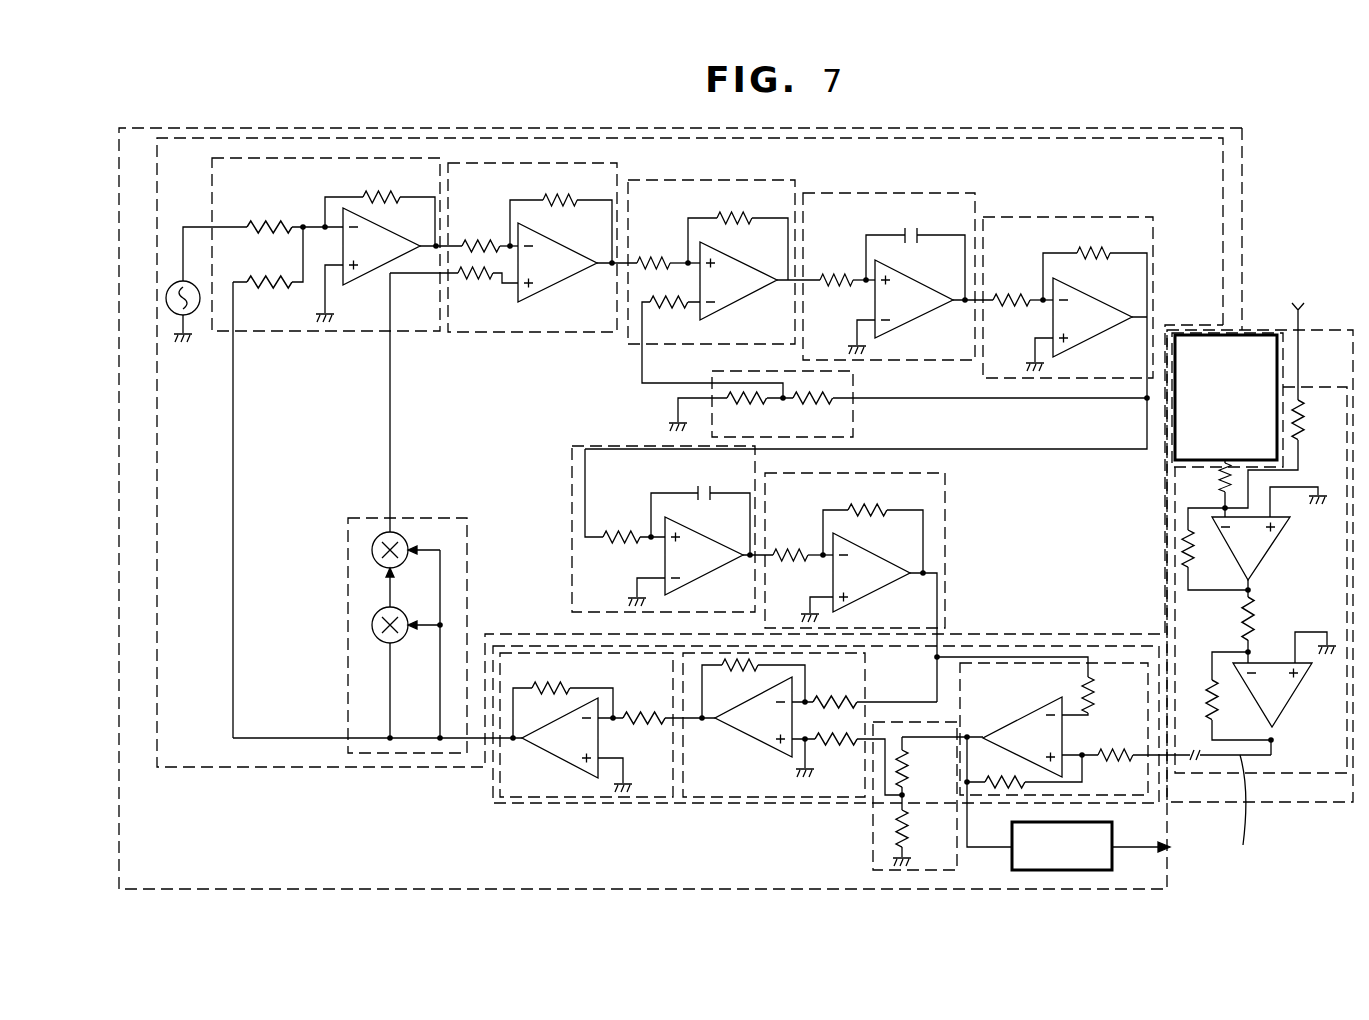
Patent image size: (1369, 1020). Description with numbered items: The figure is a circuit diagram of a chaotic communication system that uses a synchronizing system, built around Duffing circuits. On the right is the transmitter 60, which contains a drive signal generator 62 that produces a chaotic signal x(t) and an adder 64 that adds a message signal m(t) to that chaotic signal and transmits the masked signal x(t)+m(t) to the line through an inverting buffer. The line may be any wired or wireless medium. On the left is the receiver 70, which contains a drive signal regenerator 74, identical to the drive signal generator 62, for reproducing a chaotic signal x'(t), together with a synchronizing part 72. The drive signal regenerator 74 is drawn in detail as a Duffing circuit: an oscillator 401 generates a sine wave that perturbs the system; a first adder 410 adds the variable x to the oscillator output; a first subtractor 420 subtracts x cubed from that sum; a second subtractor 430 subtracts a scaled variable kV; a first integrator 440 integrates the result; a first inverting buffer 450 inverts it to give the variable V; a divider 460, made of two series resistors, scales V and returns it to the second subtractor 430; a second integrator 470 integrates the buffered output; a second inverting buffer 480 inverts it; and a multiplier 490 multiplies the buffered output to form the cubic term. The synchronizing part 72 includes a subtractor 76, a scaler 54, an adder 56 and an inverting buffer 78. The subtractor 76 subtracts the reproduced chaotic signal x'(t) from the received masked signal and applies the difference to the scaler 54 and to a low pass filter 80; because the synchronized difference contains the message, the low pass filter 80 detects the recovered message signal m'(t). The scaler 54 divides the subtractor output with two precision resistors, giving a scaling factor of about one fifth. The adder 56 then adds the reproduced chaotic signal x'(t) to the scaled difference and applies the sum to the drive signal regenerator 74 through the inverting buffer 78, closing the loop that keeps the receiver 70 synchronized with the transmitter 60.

The receiver 70 is at (338, 124).
The drive signal regenerator 74 is at (1242, 142).
The transmitter 60 is at (1340, 330).
The drive signal generator 62 is at (1227, 400).
The adder 64 is at (1297, 773).
The oscillator 401 is at (195, 312).
The first adder 410 is at (348, 331).
The first subtractor 420 is at (485, 332).
The second subtractor 430 is at (700, 178).
The first integrator 440 is at (893, 193).
The first inverting buffer 450 is at (1065, 217).
The divider 460 is at (853, 418).
The second integrator 470 is at (590, 446).
The second inverting buffer 480 is at (945, 522).
The multiplier 490 is at (435, 518).
The inverting buffer 78 is at (537, 646).
The subtractor 76 is at (1118, 663).
The synchronizing part 72 is at (580, 803).
The adder 56 is at (730, 803).
The scaler 54 is at (873, 832).
The low pass filter 80 is at (1112, 833).